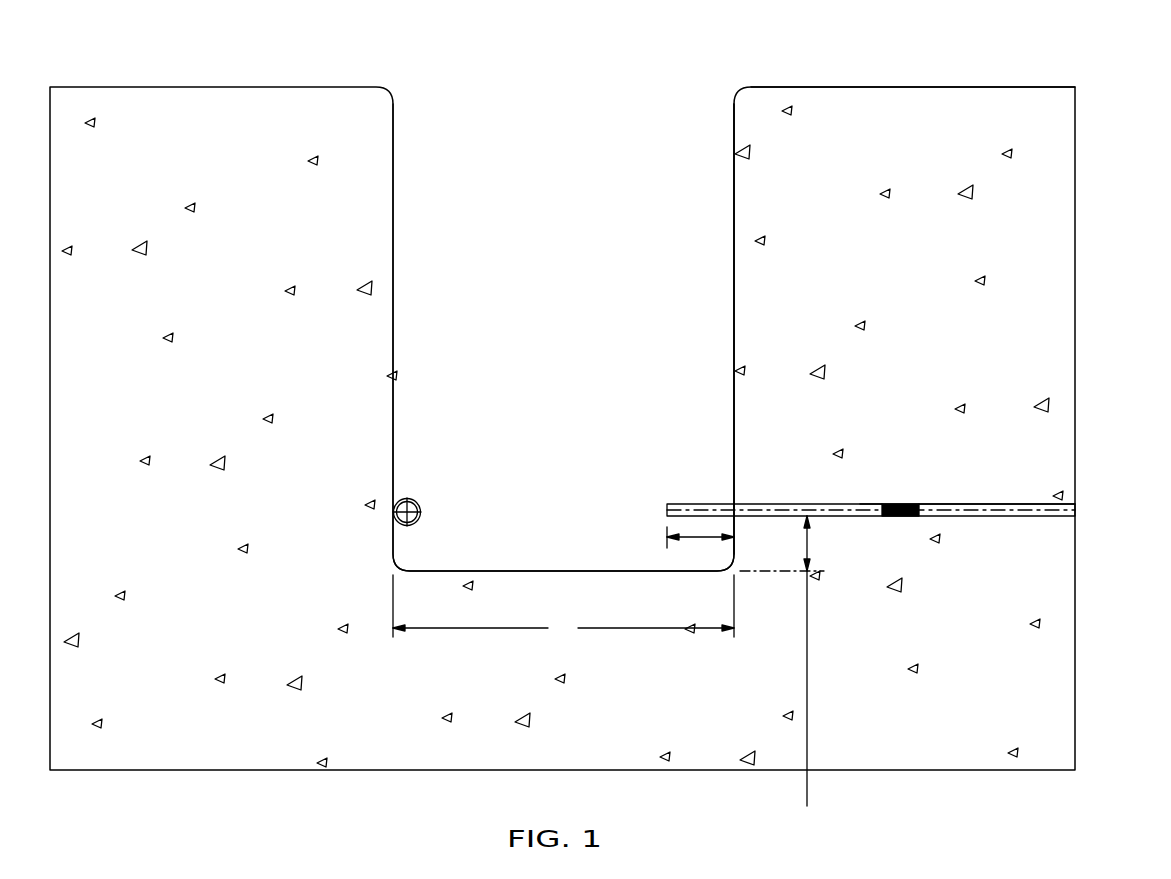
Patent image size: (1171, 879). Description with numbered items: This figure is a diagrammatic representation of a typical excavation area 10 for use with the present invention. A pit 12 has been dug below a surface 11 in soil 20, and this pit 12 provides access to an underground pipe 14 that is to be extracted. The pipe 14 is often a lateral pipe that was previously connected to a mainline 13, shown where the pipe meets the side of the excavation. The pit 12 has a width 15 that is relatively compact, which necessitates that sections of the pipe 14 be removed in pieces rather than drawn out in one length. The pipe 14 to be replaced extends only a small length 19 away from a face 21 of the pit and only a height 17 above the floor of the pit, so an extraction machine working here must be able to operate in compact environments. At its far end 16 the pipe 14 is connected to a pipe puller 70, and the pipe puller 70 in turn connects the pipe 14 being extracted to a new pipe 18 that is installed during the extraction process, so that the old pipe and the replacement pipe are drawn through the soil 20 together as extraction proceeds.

The excavation area 10 is at (562, 385).
The surface 11 is at (913, 61).
The pit 12 is at (563, 297).
The mainline 13 is at (448, 478).
The underground pipe 14 is at (839, 479).
The width 15 is at (563, 608).
The far end 16 is at (763, 431).
The height 17 is at (807, 806).
The new pipe 18 is at (1041, 470).
The length 19 is at (700, 546).
The soil 20 is at (567, 428).
The face 21 is at (679, 329).
The pipe puller 70 is at (1016, 450).